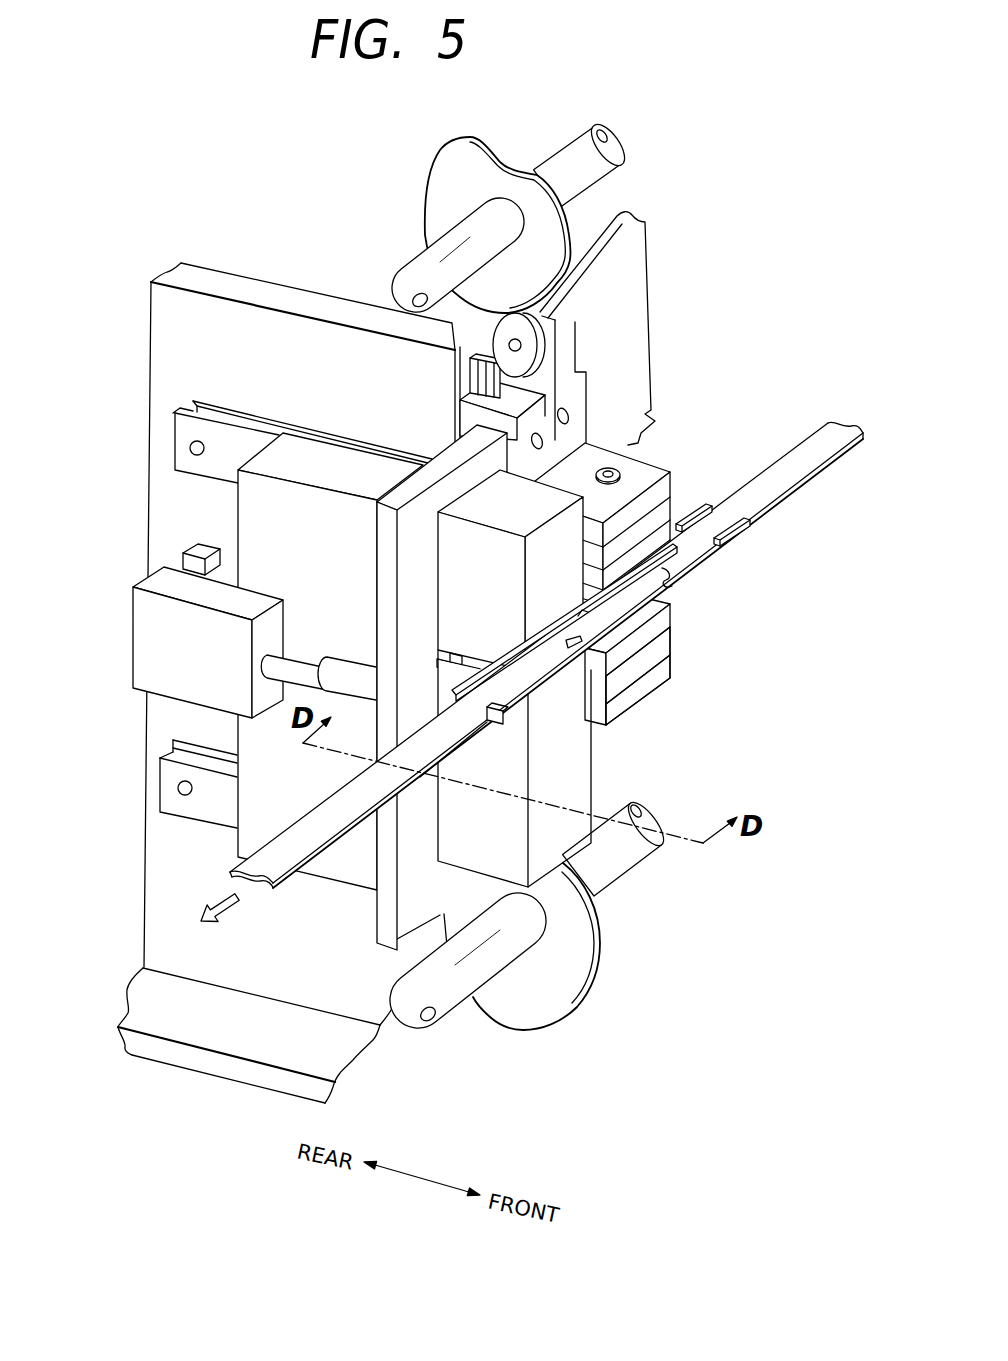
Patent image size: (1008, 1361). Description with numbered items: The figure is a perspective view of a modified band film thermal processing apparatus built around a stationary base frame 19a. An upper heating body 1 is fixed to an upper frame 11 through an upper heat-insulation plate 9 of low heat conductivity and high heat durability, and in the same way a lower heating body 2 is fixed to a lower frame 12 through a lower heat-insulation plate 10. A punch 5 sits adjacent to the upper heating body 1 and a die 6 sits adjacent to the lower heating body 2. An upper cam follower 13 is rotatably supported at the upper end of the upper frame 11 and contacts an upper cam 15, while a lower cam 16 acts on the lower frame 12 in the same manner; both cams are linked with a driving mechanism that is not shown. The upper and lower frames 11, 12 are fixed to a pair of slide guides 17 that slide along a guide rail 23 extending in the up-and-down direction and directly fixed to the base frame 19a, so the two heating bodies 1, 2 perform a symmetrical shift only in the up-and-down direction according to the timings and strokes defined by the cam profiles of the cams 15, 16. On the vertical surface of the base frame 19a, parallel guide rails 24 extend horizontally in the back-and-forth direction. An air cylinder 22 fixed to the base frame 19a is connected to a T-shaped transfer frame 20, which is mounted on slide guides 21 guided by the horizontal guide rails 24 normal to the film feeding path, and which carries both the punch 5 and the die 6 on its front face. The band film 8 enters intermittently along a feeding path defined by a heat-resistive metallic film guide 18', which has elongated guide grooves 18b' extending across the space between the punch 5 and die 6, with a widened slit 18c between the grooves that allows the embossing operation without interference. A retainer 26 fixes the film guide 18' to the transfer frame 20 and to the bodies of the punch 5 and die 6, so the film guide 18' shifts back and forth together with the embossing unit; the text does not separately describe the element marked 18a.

The upper heating body 1 is at (700, 549).
The lower heating body 2 is at (667, 627).
The punch 5 is at (578, 486).
The die 6 is at (577, 843).
The band film 8 is at (820, 470).
The upper heat-insulation plate 9 is at (665, 513).
The lower heat-insulation plate 10 is at (667, 657).
The upper frame 11 is at (642, 470).
The lower frame 12 is at (667, 677).
The upper cam follower 13 is at (577, 337).
The upper cam 15 is at (556, 218).
The lower cam 16 is at (562, 994).
The slide guides 17 is at (530, 345).
The film guide 18' is at (752, 552).
The clip 18a is at (660, 582).
The elongated guide grooves 18b' is at (647, 696).
The widened slit 18c is at (485, 700).
The stationary base frame 19a is at (207, 277).
The T-shaped transfer frame 20 is at (293, 465).
The slide guides 21 is at (352, 452).
The air cylinder 22 is at (133, 624).
The guide rail 23 is at (470, 383).
The parallel guide rails 24 is at (176, 441).
The retainer 26 is at (545, 674).